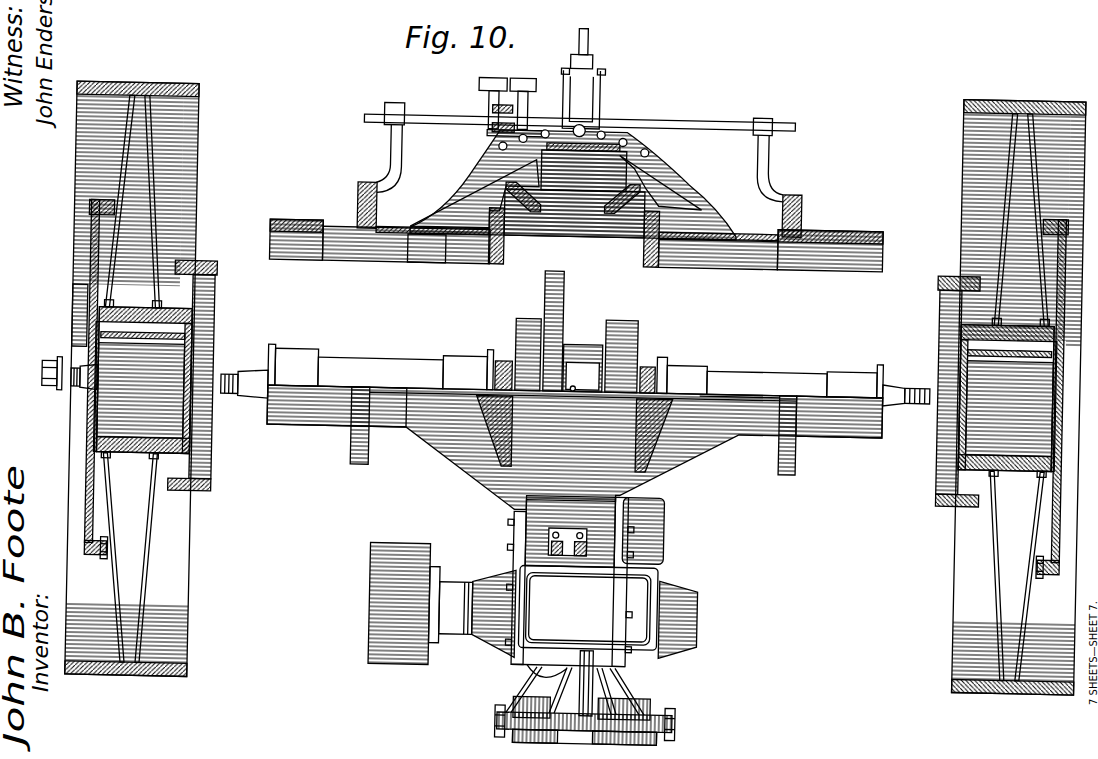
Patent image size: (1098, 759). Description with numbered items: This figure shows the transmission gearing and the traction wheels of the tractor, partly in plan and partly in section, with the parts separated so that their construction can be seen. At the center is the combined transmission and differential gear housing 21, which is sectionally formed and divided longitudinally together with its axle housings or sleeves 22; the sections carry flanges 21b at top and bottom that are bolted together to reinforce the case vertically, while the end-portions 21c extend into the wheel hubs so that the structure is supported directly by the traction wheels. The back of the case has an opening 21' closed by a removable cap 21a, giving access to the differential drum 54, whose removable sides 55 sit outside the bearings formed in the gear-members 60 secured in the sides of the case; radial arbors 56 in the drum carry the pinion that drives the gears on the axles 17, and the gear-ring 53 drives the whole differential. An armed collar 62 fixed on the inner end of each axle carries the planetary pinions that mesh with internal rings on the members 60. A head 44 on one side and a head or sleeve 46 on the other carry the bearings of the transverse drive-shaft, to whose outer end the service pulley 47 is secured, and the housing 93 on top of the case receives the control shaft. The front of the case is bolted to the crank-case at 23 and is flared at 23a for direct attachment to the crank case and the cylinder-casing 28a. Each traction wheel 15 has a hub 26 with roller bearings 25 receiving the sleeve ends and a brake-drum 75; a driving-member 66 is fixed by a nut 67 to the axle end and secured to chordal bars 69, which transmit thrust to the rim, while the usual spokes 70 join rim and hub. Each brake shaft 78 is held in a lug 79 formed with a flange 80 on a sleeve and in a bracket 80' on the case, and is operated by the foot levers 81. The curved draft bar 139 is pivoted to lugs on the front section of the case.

The wheel tire 15 is at (73, 307).
The axle 17 is at (258, 380).
The combined transmission and differential gear housing 21 is at (576, 358).
The removable cap 21a is at (589, 128).
The flanges 21b is at (713, 392).
The end-portions 21c is at (303, 225).
The opening 21' is at (578, 121).
The axle housings or sleeves 22 is at (410, 243).
The bolted connection 23 is at (509, 711).
The flared front end 23a is at (630, 697).
The roller bearings 25 is at (95, 443).
The hub 26 is at (130, 461).
The cylinder-casing 28a is at (519, 740).
The head 44 is at (672, 578).
The head or sleeve 46 is at (505, 572).
The service pulley 47 is at (399, 603).
The gear-ring 53 is at (556, 304).
The drum 54 is at (575, 346).
The removable sides 55 is at (583, 376).
The radial arbors 56 is at (573, 391).
The gear-members 60 is at (517, 321).
The armed collar 62 is at (500, 368).
The driving-member 66 is at (87, 477).
The nut 67 is at (42, 389).
The chordal bars 69 is at (90, 564).
The spokes 70 is at (152, 535).
The brake-drum 75 is at (215, 483).
The shaft 78 is at (434, 126).
The lug 79 is at (383, 142).
The flange 80 is at (579, 209).
The bracket 80' is at (493, 151).
The foot levers 81 is at (477, 101).
The housing 93 is at (588, 607).
The curved bar 139 is at (687, 159).